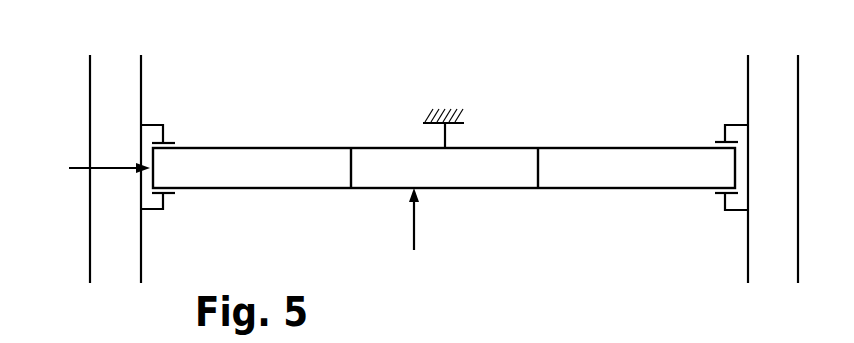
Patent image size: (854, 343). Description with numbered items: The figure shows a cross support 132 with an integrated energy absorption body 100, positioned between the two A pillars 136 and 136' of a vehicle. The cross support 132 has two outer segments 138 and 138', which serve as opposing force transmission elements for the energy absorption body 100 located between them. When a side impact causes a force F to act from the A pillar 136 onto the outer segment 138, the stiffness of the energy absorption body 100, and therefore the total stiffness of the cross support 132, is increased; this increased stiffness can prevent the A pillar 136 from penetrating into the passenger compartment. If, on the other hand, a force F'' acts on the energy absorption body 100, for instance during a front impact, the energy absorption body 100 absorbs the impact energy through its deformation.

The energy absorption body 100 is at (385, 138).
The cross support 132 is at (580, 134).
The A pillar 136 is at (115, 141).
The A pillar 136' is at (773, 141).
The outer segment 138 is at (252, 196).
The outer segment 138' is at (636, 196).
The force F is at (91, 149).
The force F'' is at (450, 219).